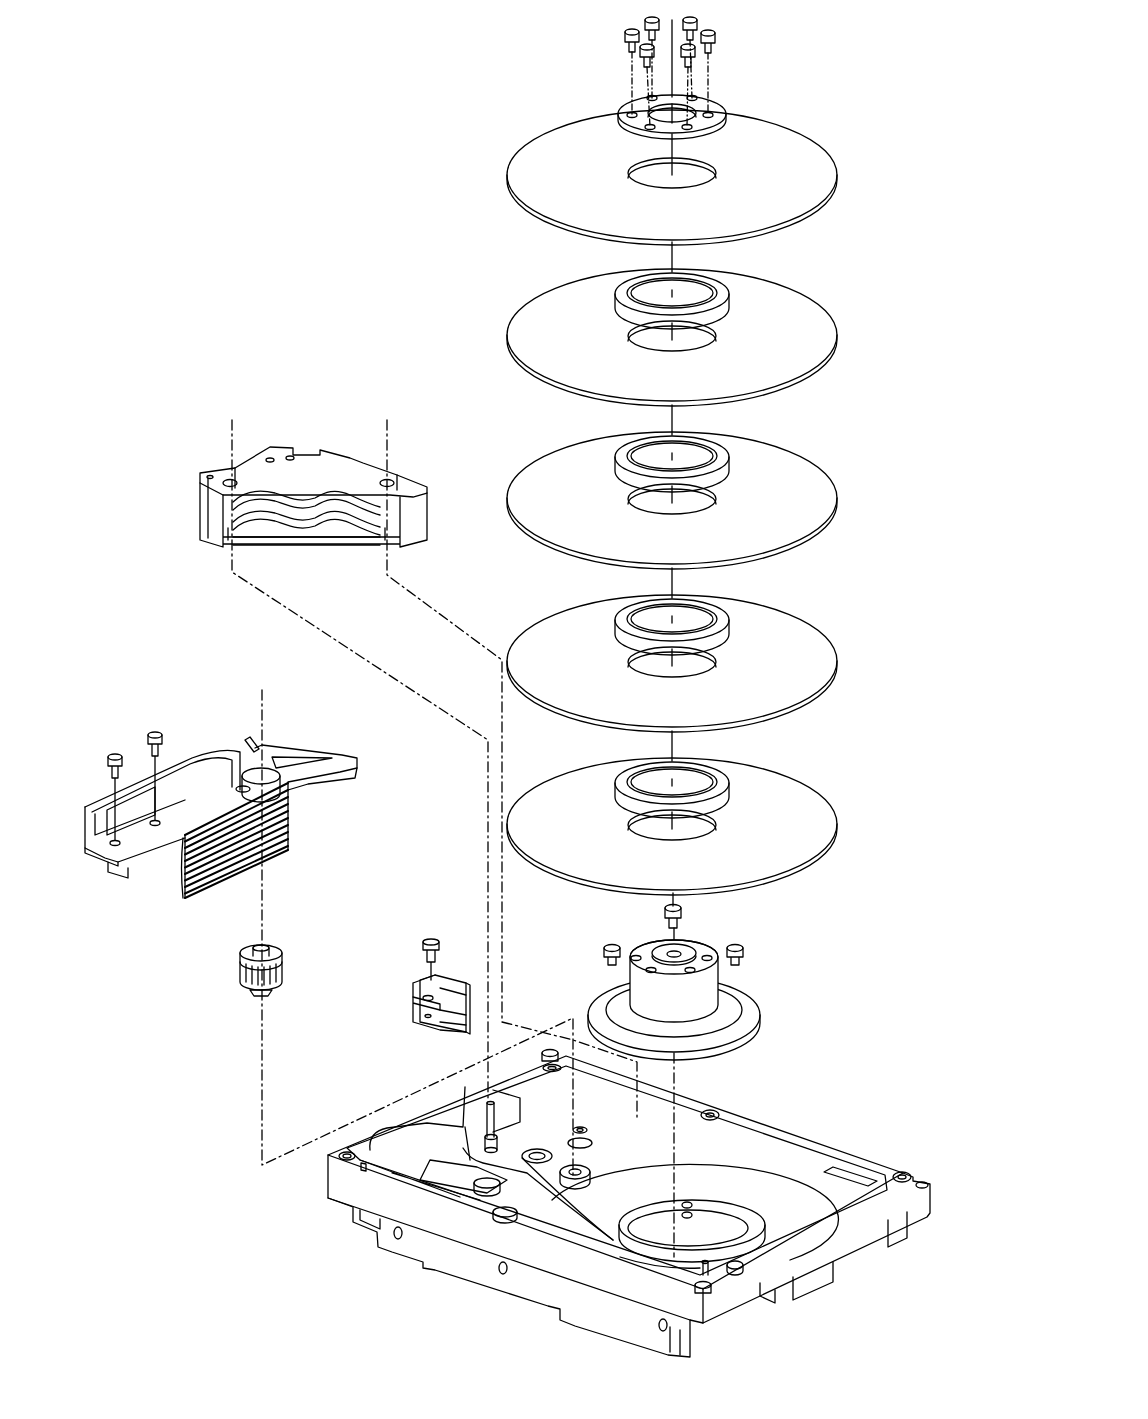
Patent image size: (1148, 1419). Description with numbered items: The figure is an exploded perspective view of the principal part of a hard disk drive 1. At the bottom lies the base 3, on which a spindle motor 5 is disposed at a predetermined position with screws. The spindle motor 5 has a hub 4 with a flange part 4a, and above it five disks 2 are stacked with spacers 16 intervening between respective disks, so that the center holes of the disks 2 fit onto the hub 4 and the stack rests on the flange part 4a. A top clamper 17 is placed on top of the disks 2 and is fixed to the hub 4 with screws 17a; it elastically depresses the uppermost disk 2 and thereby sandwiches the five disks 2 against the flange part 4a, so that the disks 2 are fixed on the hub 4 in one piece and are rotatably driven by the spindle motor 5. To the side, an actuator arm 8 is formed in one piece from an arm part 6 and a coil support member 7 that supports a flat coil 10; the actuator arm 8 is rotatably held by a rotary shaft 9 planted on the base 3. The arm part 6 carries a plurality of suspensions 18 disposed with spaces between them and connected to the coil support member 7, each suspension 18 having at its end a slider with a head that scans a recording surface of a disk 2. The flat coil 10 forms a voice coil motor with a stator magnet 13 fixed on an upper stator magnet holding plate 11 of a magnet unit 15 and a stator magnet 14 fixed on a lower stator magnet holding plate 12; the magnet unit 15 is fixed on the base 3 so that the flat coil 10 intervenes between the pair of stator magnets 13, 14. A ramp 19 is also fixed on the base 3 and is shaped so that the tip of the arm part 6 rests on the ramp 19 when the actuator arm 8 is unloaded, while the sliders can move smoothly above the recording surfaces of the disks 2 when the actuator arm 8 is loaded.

The hard disk drive 1 is at (866, 122).
The disk 2 is at (788, 137).
The base 3 is at (858, 1158).
The hub 4 is at (648, 990).
The flange part 4a is at (725, 1004).
The spindle motor 5 is at (762, 968).
The arm part 6 is at (163, 931).
The coil support member 7 is at (286, 814).
The actuator arm 8 is at (190, 708).
The rotary shaft 9 is at (280, 966).
The flat coil 10 is at (287, 745).
The upper stator magnet holding plate 11 is at (336, 472).
The lower stator magnet holding plate 12 is at (334, 544).
The stator magnet 13 is at (277, 508).
The stator magnet 14 is at (278, 522).
The magnet unit 15 is at (302, 412).
The spacer 16 is at (722, 288).
The top clamper 17 is at (722, 103).
The screws 17a is at (712, 42).
The suspension 18 is at (237, 878).
The ramp 19 is at (422, 988).